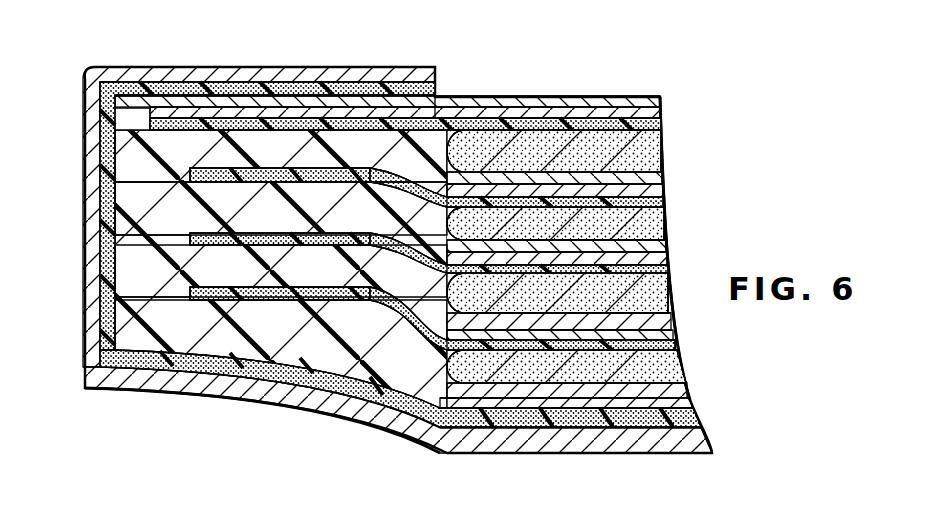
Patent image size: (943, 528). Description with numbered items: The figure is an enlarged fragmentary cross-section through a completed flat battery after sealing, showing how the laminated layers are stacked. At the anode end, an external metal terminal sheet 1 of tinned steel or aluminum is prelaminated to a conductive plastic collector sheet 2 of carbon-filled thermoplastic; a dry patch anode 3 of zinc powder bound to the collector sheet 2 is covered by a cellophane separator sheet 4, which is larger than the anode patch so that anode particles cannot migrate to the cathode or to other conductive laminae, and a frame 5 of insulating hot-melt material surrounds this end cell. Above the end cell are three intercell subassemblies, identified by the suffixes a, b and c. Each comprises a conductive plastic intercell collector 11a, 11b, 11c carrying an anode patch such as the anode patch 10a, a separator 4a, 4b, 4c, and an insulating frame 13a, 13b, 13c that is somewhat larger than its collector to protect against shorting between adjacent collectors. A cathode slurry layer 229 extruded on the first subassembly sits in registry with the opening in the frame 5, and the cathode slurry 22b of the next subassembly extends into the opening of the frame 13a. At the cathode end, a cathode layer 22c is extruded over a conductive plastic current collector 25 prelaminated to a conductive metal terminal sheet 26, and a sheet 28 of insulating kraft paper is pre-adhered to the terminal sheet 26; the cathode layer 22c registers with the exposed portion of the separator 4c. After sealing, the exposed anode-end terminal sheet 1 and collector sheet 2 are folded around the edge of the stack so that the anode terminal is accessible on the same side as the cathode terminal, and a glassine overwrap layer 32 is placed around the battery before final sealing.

The external metal terminal sheet 1 is at (383, 67).
The conductive plastic collector sheet 2 is at (435, 90).
The dry patch anode 3 is at (680, 404).
The cellophane separator sheet 4 is at (672, 392).
The separator sheet 4a is at (660, 319).
The separator sheet 4b is at (655, 249).
The separator sheet 4c is at (650, 178).
The frame 5 is at (150, 322).
The anode patch 10a is at (662, 336).
The intercell collector 11a is at (670, 351).
The intercell collector 11b is at (668, 269).
The intercell collector 11c is at (663, 203).
The frame 13a is at (145, 267).
The frame 13b is at (140, 210).
The frame 13c is at (130, 148).
The cathode slurry layer 22b is at (652, 297).
The cathode layer 22c is at (640, 152).
The cathode slurry layer 229 is at (665, 374).
The conductive plastic current collector 25 is at (662, 105).
The conductive metal terminal sheet 26 is at (652, 124).
The insulating sheet 28 is at (575, 97).
The glassine overwrap layer 32 is at (242, 405).